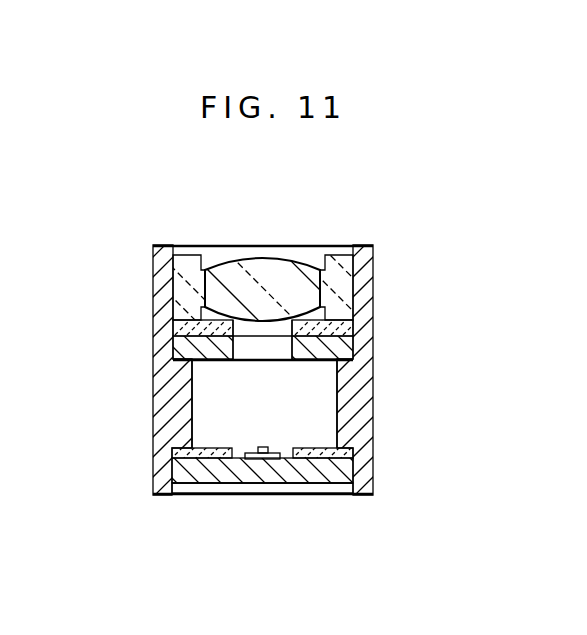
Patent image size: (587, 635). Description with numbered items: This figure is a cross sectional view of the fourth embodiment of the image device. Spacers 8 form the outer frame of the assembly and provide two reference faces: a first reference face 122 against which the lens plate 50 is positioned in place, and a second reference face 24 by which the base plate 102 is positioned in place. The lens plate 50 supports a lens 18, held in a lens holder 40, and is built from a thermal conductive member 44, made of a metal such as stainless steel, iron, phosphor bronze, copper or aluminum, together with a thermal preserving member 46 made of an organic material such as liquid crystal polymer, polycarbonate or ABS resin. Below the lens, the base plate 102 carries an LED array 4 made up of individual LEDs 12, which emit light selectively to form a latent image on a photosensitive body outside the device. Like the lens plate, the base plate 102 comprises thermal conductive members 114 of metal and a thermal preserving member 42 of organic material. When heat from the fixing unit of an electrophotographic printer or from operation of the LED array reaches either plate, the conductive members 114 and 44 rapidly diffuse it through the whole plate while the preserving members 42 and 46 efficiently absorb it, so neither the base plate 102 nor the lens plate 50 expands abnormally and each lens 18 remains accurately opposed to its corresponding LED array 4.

The LED array 4 is at (252, 452).
The spacer 8 is at (165, 405).
The LED 12 is at (265, 447).
The lens 18 is at (275, 280).
The second reference face 24 is at (346, 448).
The lens holder 40 is at (338, 252).
The thermal preserving member 42 is at (224, 476).
The thermal conductive member 44 is at (349, 326).
The thermal preserving member 46 is at (347, 351).
The lens plate 50 is at (322, 370).
The base plate 102 is at (262, 426).
The thermal conductive member 114 is at (204, 481).
The first reference face 122 is at (354, 362).